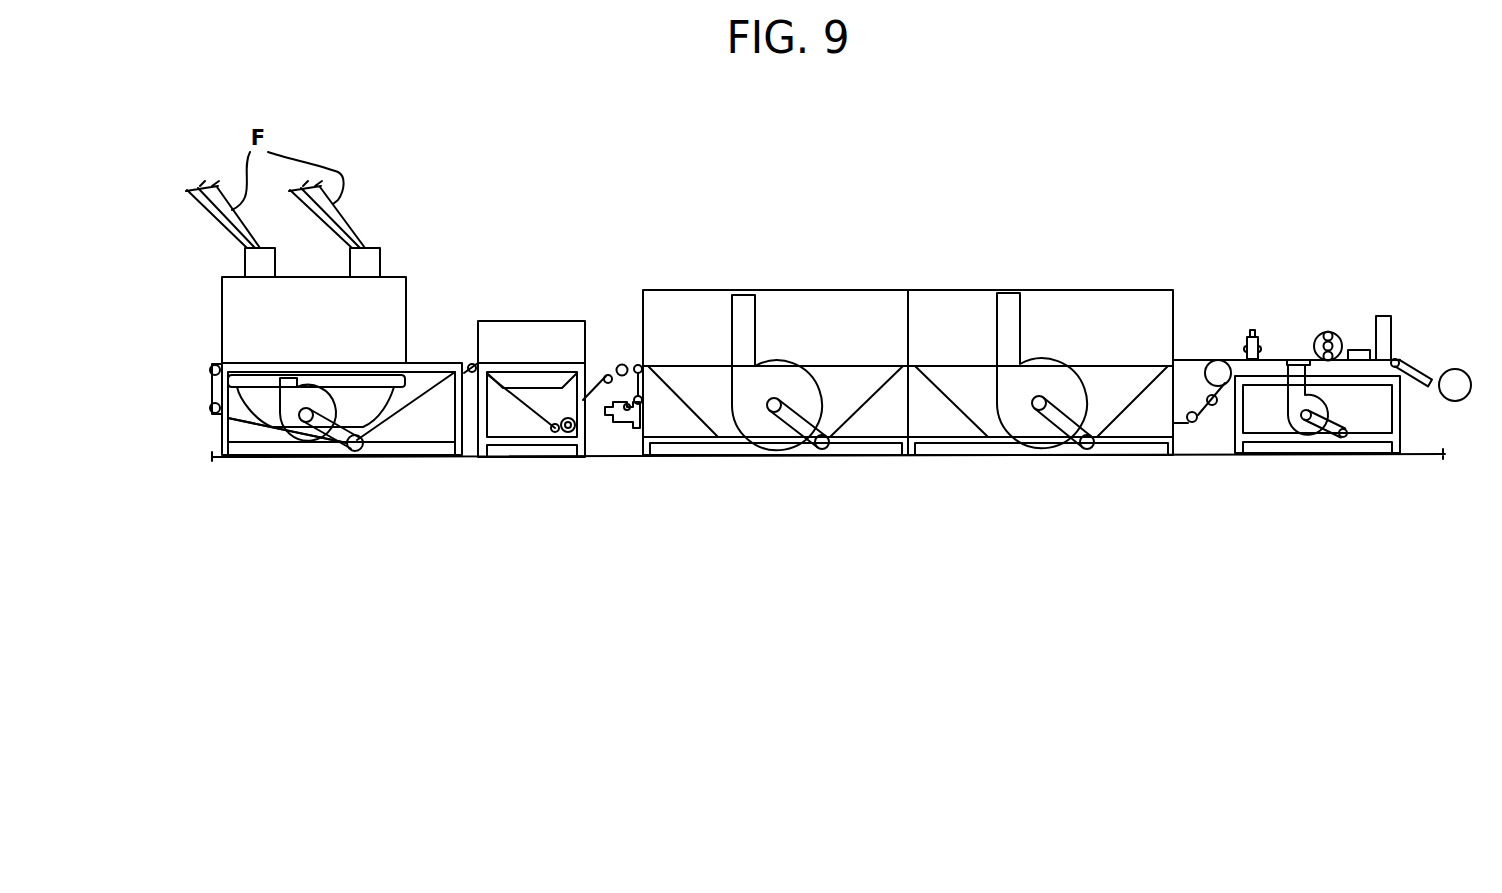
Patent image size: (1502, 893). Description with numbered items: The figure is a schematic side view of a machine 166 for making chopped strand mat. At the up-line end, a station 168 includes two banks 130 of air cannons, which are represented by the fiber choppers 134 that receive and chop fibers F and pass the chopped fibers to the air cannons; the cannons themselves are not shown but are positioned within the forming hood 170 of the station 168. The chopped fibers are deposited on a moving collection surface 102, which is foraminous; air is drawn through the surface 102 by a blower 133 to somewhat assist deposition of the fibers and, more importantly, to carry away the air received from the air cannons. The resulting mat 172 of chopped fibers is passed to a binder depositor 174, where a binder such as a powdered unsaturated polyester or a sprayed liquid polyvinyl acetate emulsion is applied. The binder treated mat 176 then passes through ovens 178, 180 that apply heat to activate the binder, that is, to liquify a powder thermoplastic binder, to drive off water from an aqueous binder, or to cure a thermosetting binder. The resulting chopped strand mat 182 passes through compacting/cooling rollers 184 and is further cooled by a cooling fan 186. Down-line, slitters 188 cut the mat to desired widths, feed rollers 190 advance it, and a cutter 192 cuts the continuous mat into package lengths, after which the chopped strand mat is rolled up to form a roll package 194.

The moving collection surface 102 is at (410, 415).
The bank 130 is at (278, 266).
The blower 133 is at (302, 433).
The fiber chopper 134 is at (378, 261).
The machine 166 is at (711, 220).
The station 168 is at (270, 465).
The forming hood 170 is at (395, 280).
The mat 172 is at (434, 362).
The binder depositor 174 is at (543, 321).
The binder treated mat 176 is at (603, 363).
The oven 178 is at (822, 290).
The oven 180 is at (950, 290).
The chopped strand mat 182 is at (1187, 358).
The compacting/cooling rollers 184 is at (1253, 330).
The cooling fan 186 is at (1300, 424).
The slitters 188 is at (1328, 332).
The feed rollers 190 is at (1362, 352).
The cutter 192 is at (1383, 317).
The roll package 194 is at (1455, 392).